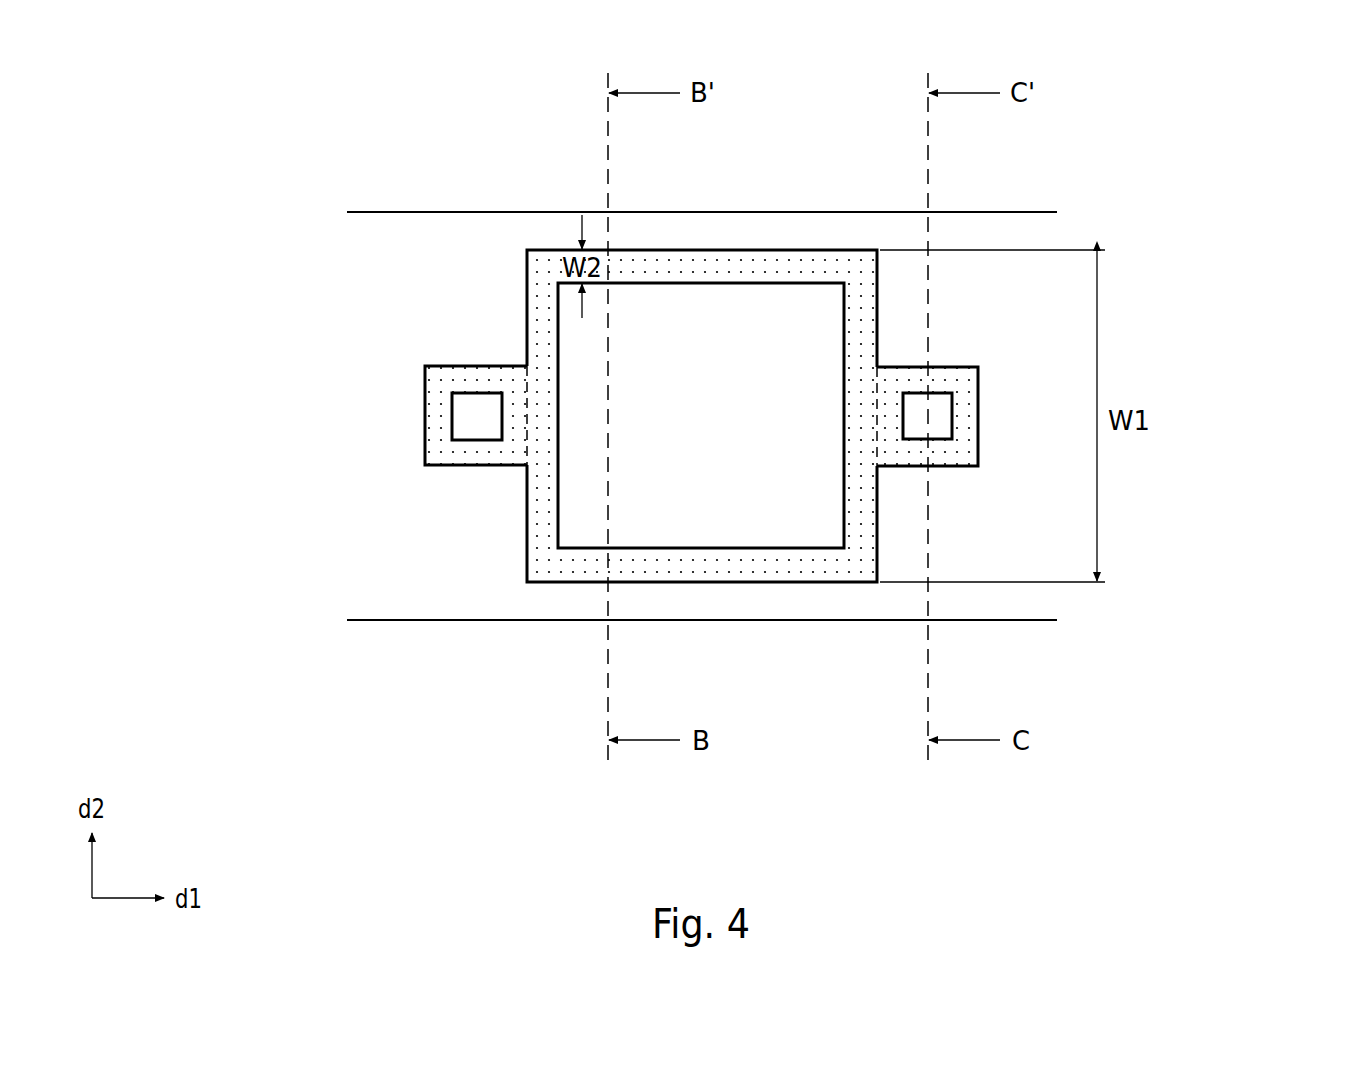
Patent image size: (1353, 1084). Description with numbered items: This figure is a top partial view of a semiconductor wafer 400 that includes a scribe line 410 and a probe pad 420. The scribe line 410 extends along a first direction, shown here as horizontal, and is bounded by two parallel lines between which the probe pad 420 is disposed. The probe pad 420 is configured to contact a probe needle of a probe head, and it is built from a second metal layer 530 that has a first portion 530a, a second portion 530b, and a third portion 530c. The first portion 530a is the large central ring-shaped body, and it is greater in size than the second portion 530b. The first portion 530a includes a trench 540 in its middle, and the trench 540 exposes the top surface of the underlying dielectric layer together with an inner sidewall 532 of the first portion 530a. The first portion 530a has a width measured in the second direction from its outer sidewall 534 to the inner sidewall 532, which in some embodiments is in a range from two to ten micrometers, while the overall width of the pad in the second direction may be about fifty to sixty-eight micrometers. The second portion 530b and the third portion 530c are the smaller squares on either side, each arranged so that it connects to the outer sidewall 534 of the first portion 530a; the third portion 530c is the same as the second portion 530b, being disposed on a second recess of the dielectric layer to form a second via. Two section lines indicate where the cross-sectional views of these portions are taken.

The semiconductor wafer 400 is at (223, 78).
The scribe line 410 is at (332, 272).
The probe pad 420 is at (721, 358).
The second metal layer 530 is at (1258, 55).
The first portion 530a is at (714, 358).
The second portion 530b is at (962, 377).
The third portion 530c is at (443, 365).
The inner sidewall 532 is at (730, 284).
The outer sidewall 534 is at (692, 250).
The trench 540 is at (725, 432).